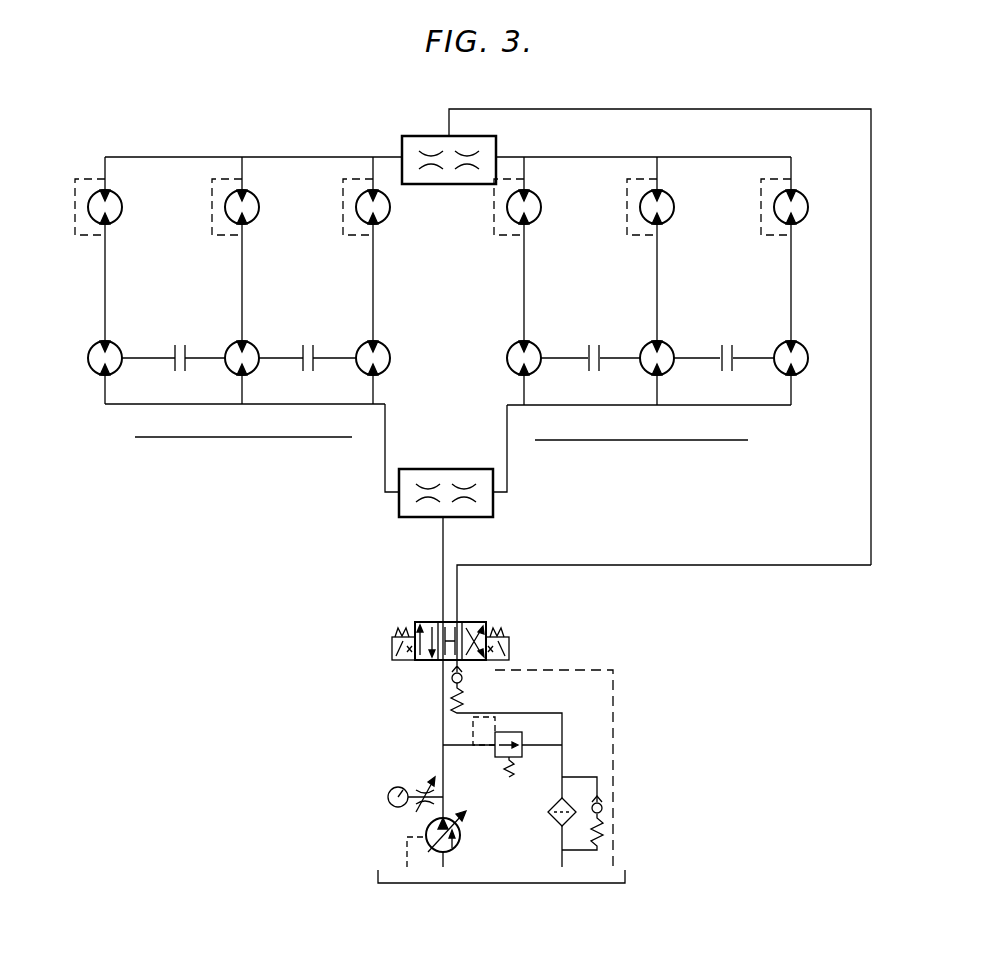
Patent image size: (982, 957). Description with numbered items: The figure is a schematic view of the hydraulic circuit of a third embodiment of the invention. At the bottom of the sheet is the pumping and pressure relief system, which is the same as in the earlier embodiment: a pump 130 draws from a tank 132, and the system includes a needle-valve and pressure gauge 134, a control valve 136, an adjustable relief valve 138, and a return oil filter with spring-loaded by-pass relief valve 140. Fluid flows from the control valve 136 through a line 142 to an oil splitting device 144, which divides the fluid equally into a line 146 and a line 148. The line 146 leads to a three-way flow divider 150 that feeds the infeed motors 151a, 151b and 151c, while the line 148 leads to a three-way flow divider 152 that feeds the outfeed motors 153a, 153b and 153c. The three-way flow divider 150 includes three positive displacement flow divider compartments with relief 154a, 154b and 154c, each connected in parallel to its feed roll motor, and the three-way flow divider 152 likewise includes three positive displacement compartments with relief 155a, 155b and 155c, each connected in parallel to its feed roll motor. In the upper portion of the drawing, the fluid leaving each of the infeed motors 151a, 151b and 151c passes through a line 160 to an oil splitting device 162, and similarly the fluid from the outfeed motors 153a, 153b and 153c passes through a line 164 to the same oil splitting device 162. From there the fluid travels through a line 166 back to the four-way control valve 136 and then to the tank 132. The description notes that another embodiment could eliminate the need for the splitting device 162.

The pump 130 is at (455, 848).
The tank 132 is at (520, 883).
The needle-valve and pressure gauge 134 is at (393, 806).
The control valve 136 is at (403, 660).
The adjustable relief valve 138 is at (530, 742).
The return oil filter with spring-loaded by-pass relief valve 140 is at (625, 806).
The line 142 is at (443, 575).
The oil splitting device 144 is at (455, 469).
The line 146 is at (383, 453).
The line 148 is at (508, 473).
The three-way flow divider 150 is at (218, 462).
The infeed motor 151a is at (118, 215).
The infeed motor 151b is at (254, 215).
The infeed motor 151c is at (385, 215).
The three-way flow divider 152 is at (658, 467).
The outfeed motor 153a is at (536, 215).
The outfeed motor 153b is at (669, 215).
The outfeed motor 153c is at (802, 215).
The positive displacement flow divider compartment with relief 154a is at (92, 352).
The positive displacement flow divider compartment with relief 154b is at (227, 352).
The positive displacement flow divider compartment with relief 154c is at (357, 352).
The positive displacement flow divider compartment with relief 155a is at (540, 352).
The positive displacement flow divider compartment with relief 155b is at (668, 352).
The positive displacement flow divider compartment with relief 155c is at (800, 352).
The line 160 is at (331, 157).
The oil splitting device 162 is at (497, 150).
The line 164 is at (655, 157).
The line 166 is at (745, 565).